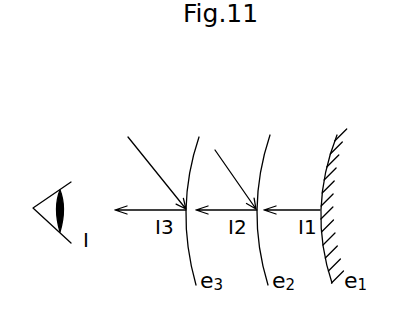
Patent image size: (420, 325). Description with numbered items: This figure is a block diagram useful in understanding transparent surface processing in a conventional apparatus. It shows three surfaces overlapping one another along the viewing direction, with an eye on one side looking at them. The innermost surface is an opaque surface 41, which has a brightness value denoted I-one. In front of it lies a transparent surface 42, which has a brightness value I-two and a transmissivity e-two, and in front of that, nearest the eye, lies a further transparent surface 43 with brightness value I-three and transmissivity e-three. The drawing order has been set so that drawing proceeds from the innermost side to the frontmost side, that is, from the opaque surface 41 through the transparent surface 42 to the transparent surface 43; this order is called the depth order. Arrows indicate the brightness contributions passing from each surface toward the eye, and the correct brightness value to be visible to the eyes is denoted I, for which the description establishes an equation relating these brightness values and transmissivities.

The opaque surface 41 is at (332, 140).
The transparent surface 42 is at (267, 140).
The transparent surface 43 is at (197, 140).